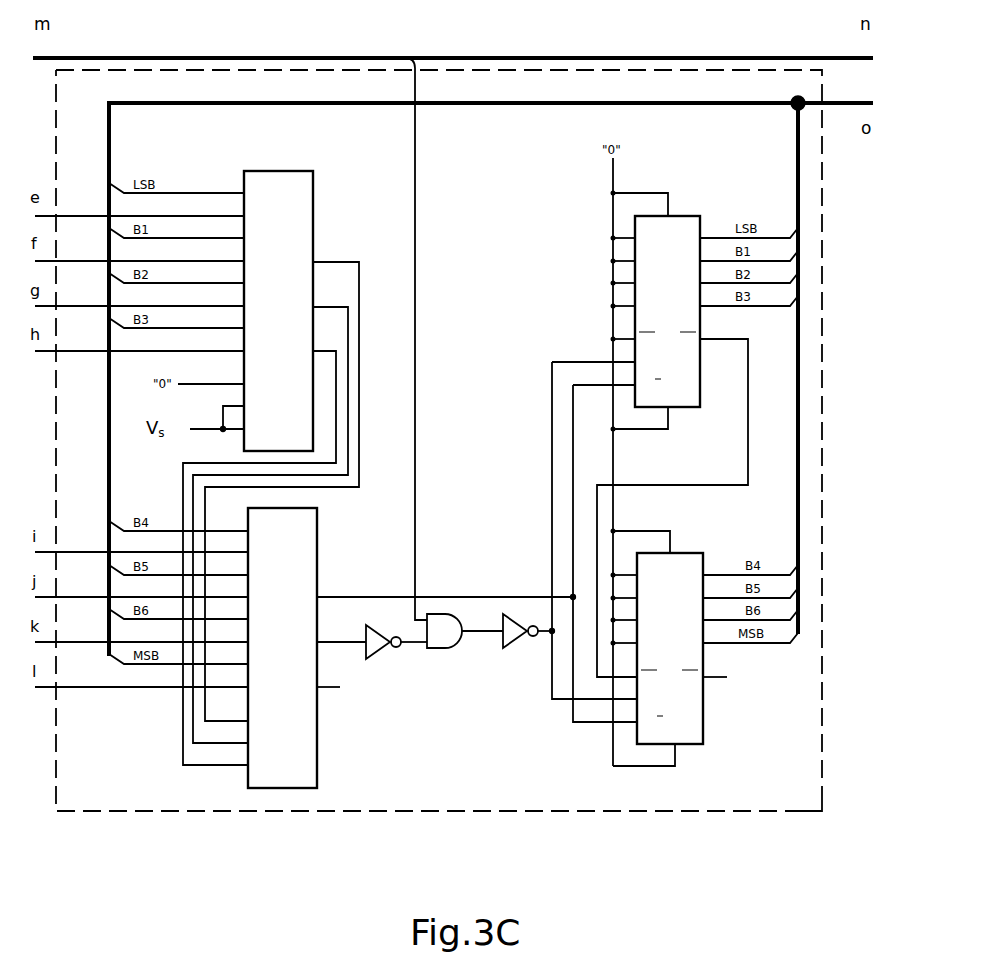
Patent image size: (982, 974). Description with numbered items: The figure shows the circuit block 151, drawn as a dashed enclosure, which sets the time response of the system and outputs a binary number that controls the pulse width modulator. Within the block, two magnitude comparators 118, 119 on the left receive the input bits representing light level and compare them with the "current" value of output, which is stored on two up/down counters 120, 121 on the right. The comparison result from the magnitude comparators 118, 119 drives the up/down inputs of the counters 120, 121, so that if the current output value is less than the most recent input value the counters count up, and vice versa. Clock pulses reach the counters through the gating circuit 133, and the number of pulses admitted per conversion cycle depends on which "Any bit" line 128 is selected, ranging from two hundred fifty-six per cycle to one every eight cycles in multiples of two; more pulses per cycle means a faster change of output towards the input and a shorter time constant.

The magnitude comparator 118 is at (306, 178).
The magnitude comparator 119 is at (317, 540).
The up/down counter 120 is at (683, 226).
The up/down counter 121 is at (683, 559).
The "Any bit" line 128 is at (415, 232).
The gating circuit 133 is at (465, 640).
The circuit block 151 is at (805, 813).